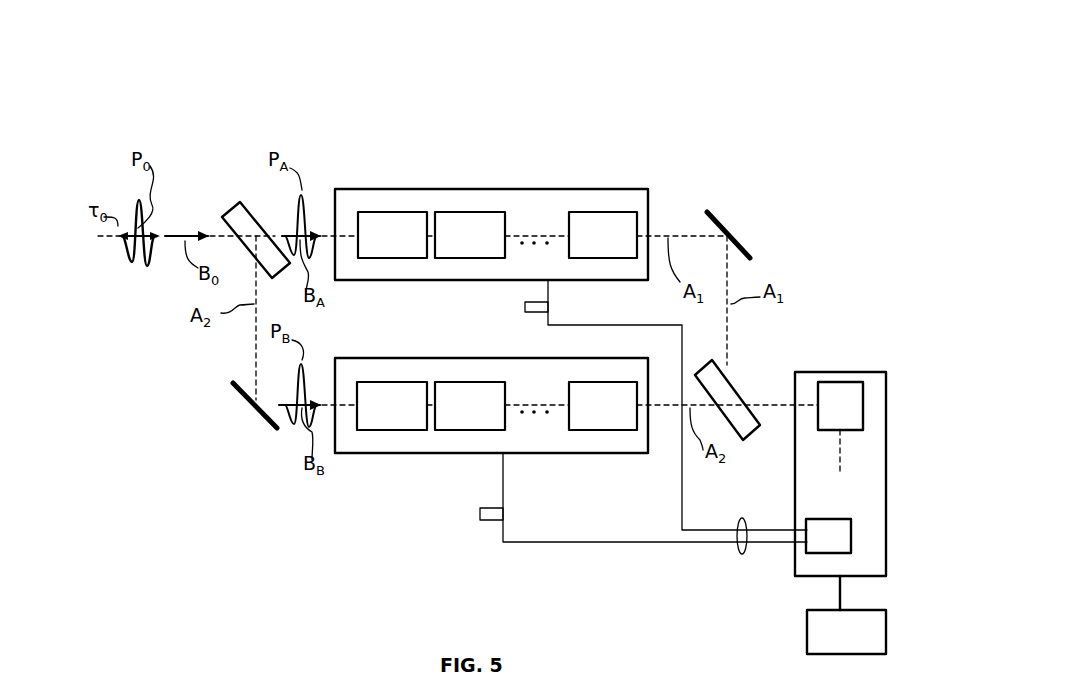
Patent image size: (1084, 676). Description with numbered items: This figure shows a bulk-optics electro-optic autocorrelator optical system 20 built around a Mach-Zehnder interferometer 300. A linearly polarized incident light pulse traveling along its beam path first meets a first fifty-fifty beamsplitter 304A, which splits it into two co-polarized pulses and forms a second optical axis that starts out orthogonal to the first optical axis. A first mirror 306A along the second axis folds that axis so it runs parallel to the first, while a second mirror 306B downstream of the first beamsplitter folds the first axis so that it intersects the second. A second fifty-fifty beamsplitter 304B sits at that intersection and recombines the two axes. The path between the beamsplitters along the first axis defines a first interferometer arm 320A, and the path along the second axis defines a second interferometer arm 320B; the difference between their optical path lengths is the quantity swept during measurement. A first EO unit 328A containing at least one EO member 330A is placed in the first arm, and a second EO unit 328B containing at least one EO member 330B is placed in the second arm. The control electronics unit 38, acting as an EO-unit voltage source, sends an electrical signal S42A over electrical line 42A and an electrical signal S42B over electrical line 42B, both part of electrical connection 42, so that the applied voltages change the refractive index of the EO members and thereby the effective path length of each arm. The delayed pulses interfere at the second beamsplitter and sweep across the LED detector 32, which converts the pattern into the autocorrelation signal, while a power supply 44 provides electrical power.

The EO autocorrelator optical system 20 is at (628, 94).
The Mach-Zehnder interferometer 300 is at (330, 512).
The first 50-50 beamsplitter 304A is at (232, 210).
The second 50-50 beamsplitter 304B is at (748, 388).
The first mirror 306A is at (252, 400).
The second mirror 306B is at (736, 220).
The first interferometer arm 320A is at (414, 156).
The second interferometer arm 320B is at (550, 478).
The first EO unit 328A is at (530, 188).
The second EO unit 328B is at (372, 455).
The EO member 330A is at (497, 235).
The EO member 330B is at (497, 406).
The electrical connection 42 is at (746, 556).
The electrical line 42A is at (683, 474).
The electrical line 42B is at (515, 542).
The electrical signal S42A is at (525, 302).
The electrical signal S42B is at (480, 508).
The LED detector 32 is at (840, 406).
The control electronics unit 38 is at (828, 536).
The power supply 44 is at (846, 632).